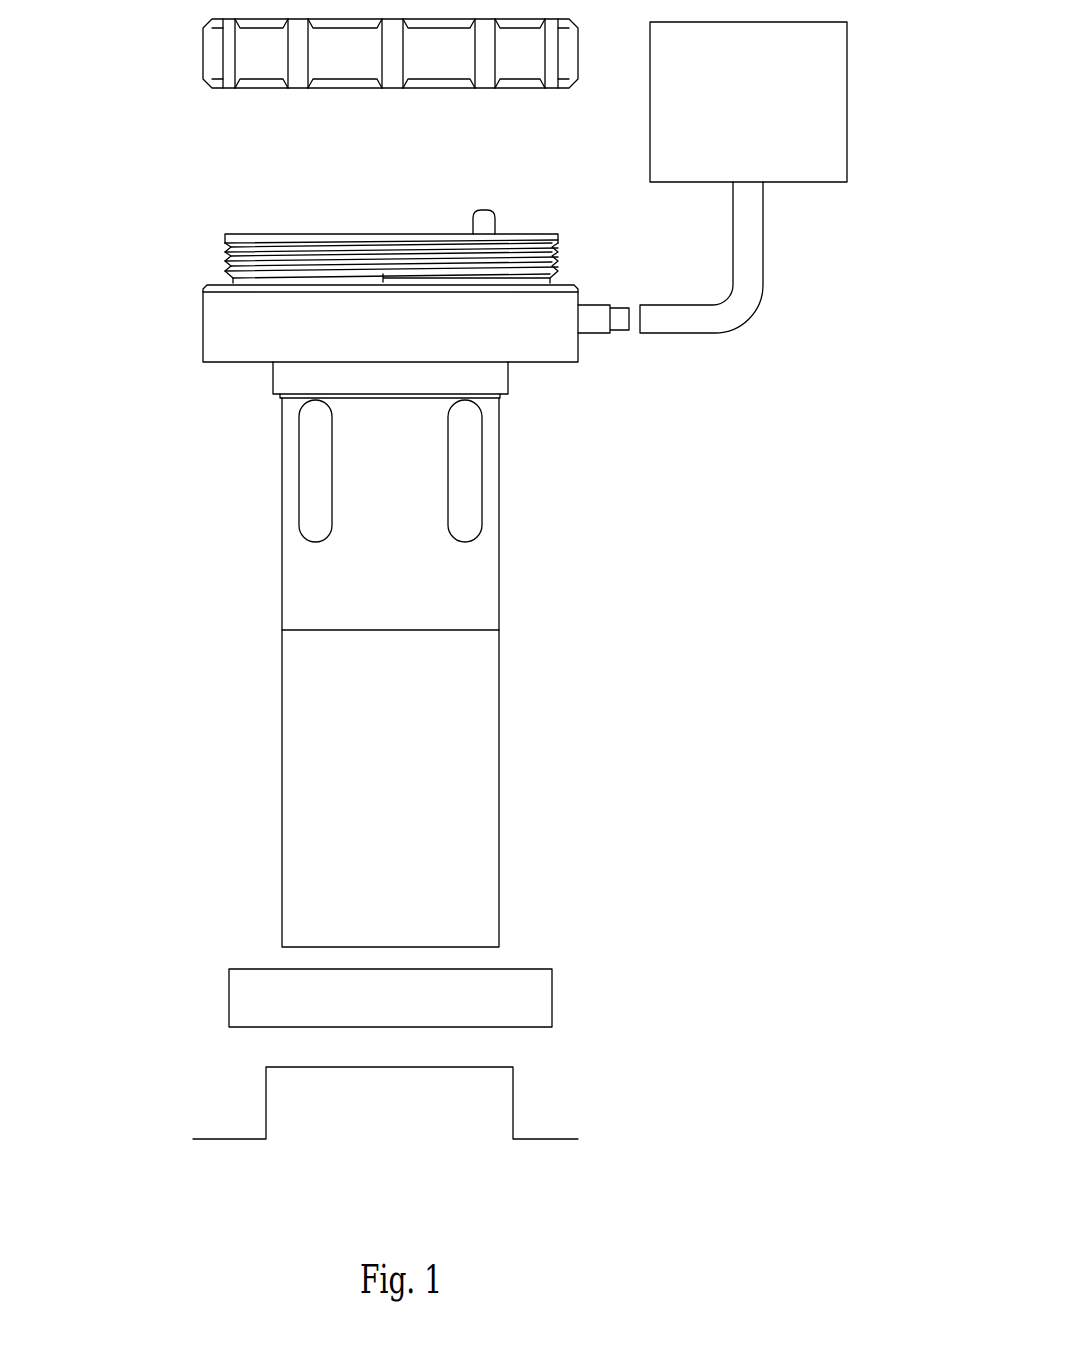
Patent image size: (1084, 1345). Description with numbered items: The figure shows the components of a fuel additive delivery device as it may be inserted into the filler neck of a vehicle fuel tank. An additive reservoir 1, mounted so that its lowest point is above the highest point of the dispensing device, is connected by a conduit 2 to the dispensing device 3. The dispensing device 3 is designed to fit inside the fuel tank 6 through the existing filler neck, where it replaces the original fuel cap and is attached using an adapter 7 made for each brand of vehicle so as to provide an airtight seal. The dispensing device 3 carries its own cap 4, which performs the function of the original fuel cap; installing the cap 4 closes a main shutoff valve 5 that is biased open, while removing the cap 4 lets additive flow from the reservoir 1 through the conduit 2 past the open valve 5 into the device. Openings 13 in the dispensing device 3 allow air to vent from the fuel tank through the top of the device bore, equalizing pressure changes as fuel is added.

The additive reservoir 1 is at (792, 99).
The conduit 2 is at (750, 284).
The dispensing device 3 is at (308, 344).
The cap 4 is at (270, 52).
The main shutoff valve 5 is at (483, 212).
The fuel tank 6 is at (462, 1110).
The adapter 7 is at (467, 1007).
The openings 13 is at (467, 472).